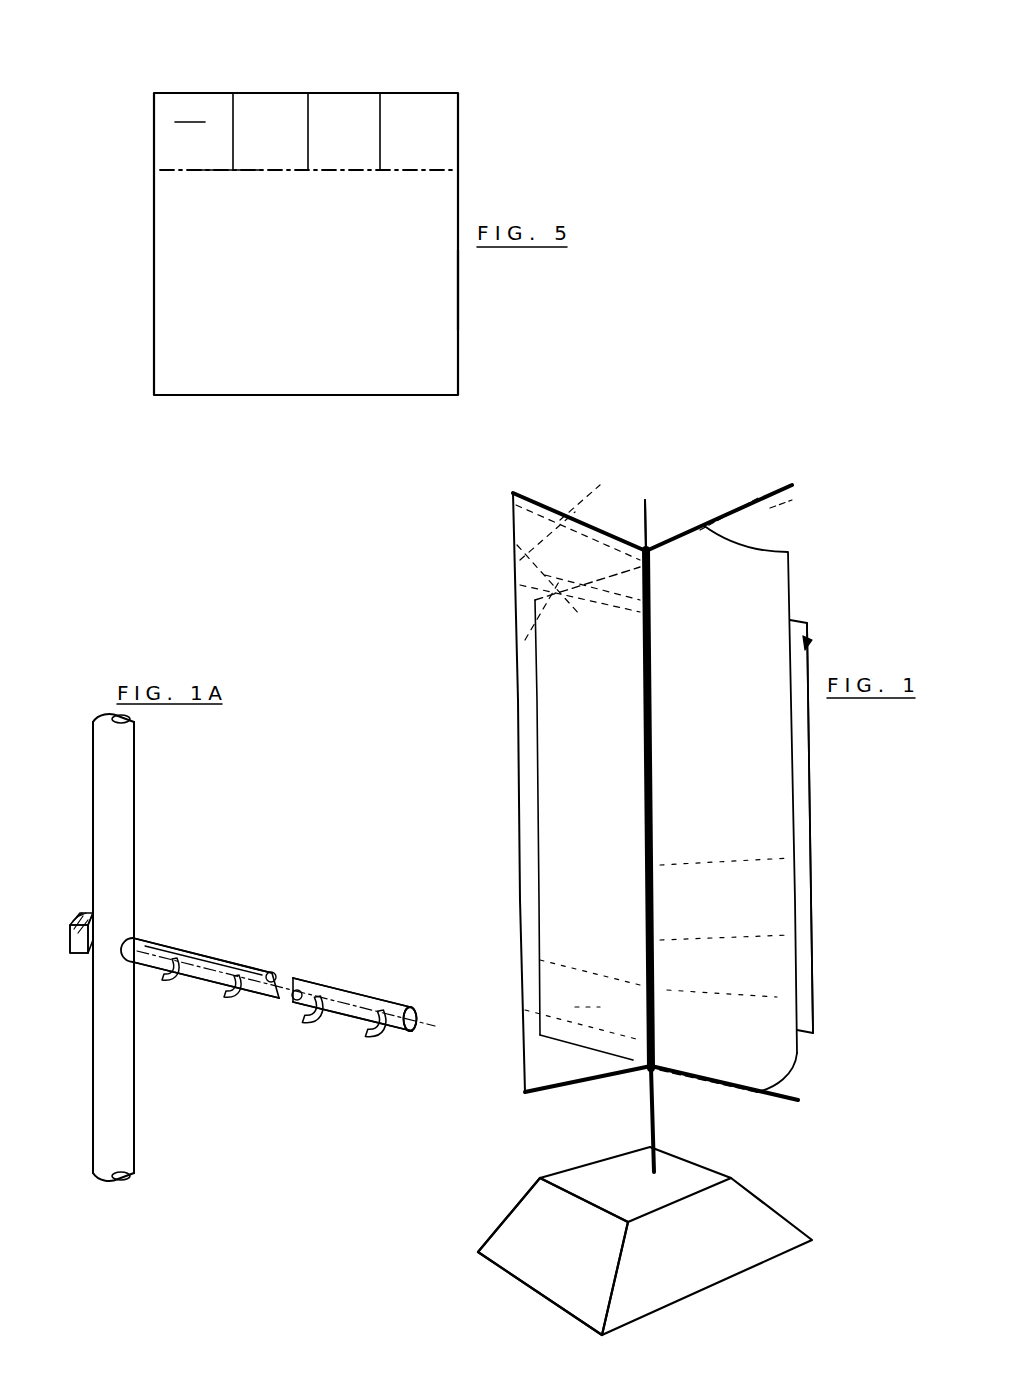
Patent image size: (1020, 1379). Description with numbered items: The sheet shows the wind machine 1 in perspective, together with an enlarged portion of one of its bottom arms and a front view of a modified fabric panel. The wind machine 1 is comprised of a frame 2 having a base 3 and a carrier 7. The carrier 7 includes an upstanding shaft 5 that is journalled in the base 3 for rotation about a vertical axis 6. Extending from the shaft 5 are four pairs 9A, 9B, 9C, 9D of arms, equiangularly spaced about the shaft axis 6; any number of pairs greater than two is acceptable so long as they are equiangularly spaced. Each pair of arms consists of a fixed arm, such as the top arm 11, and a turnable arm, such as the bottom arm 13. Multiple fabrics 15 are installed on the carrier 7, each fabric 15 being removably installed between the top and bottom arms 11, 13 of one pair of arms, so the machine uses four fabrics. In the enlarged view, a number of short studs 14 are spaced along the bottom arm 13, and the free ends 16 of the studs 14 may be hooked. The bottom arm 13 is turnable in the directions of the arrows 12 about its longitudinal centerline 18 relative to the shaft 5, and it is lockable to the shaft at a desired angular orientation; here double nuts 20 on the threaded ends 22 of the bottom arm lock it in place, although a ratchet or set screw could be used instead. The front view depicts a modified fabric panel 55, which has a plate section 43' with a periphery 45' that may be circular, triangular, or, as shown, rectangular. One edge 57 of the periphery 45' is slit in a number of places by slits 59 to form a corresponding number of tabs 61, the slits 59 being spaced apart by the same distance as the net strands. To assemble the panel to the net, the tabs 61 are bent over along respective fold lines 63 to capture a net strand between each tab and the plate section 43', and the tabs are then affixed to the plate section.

In FIG. 5, the periphery 45' is at (357, 244).
In FIG. 5, the edge 57 is at (341, 95).
In FIG. 5, the slits 59 is at (307, 123).
In FIG. 5, the tabs 61 is at (263, 143).
In FIG. 5, the fold lines 63 is at (252, 172).
In FIG. 5, the modified fabric panel 55 is at (458, 292).
In FIG. 5, the plate section 43' is at (305, 420).
In FIG. 1, the wind machine 1 is at (838, 590).
In FIG. 1, the frame 2 is at (513, 1205).
In FIG. 1, the base 3 is at (530, 1236).
In FIG. 1, the upstanding shaft 5 is at (646, 1102).
In FIG. 1A, the upstanding shaft 5 is at (120, 790).
In FIG. 1, the vertical axis 6 is at (643, 515).
In FIG. 1, the carrier 7 is at (742, 505).
In FIG. 1, the pair of arms 9A is at (777, 488).
In FIG. 1, the pair of arms 9B is at (547, 503).
In FIG. 1, the pair of arms 9C is at (560, 582).
In FIG. 1, the pair of arms 9D is at (797, 617).
In FIG. 1, the top arm 11 is at (717, 518).
In FIG. 1, the bottom arm 13 is at (780, 1100).
In FIG. 1A, the bottom arm 13 is at (152, 938).
In FIG. 1, the fabric 15 is at (793, 803).
In FIG. 1A, the arrows 12 is at (209, 1021).
In FIG. 1A, the short studs 14 is at (382, 1036).
In FIG. 1A, the free ends 16 is at (317, 1024).
In FIG. 1A, the longitudinal centerline 18 is at (413, 1013).
In FIG. 1A, the double nuts 20 is at (78, 910).
In FIG. 1A, the threaded ends 22 is at (87, 953).